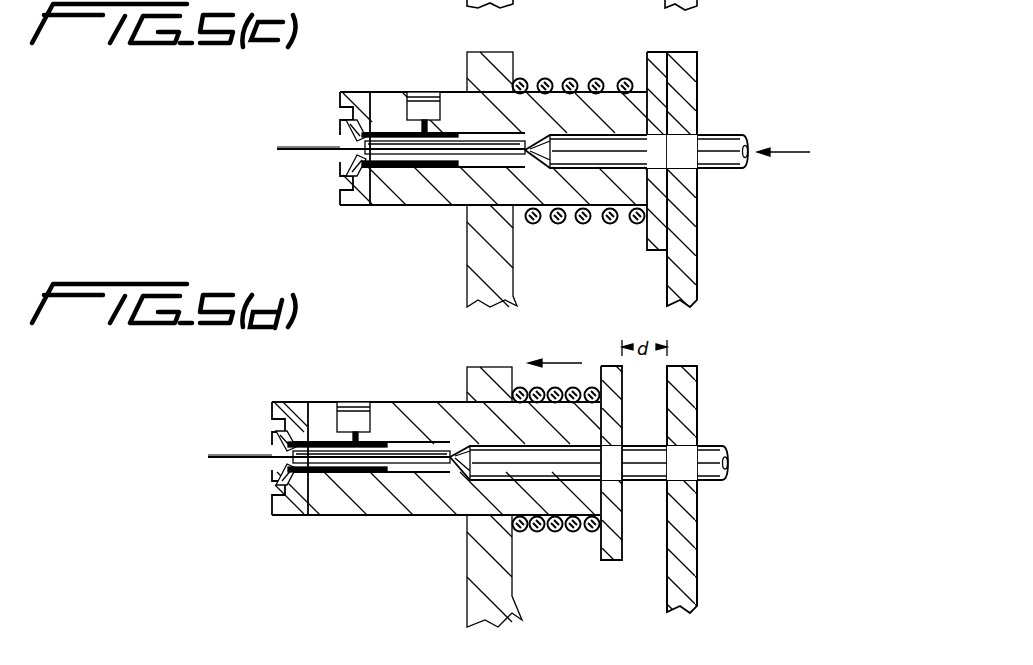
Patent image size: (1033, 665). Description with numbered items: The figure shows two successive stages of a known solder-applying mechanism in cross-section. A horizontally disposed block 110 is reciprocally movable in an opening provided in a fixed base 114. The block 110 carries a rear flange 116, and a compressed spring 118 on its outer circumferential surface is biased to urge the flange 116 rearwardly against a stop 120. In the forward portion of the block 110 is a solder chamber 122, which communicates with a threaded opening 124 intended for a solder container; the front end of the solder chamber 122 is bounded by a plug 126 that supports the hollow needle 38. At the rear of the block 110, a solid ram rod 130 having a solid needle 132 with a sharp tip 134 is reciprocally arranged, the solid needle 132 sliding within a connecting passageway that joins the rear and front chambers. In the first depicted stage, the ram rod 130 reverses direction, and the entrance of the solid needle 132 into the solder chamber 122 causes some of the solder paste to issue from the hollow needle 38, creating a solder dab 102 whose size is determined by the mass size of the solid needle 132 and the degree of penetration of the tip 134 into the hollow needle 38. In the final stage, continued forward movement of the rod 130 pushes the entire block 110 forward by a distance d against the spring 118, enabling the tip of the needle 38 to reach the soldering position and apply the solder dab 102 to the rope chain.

In FIG. 5D, the hollow needle 38 is at (243, 460).
In FIG. 5C, the solder dab 102 is at (279, 151).
In FIG. 5C, the block 110 is at (562, 188).
In FIG. 5D, the block 110 is at (433, 408).
In FIG. 5C, the fixed base 114 is at (475, 290).
In FIG. 5D, the fixed base 114 is at (472, 596).
In FIG. 5C, the rear flange 116 is at (645, 240).
In FIG. 5D, the rear flange 116 is at (607, 562).
In FIG. 5C, the compressed spring 118 is at (588, 79).
In FIG. 5D, the compressed spring 118 is at (541, 532).
In FIG. 5C, the stop 120 is at (700, 68).
In FIG. 5D, the stop 120 is at (692, 406).
In FIG. 5C, the solder chamber 122 is at (374, 133).
In FIG. 5D, the solder chamber 122 is at (318, 442).
In FIG. 5C, the threaded opening 124 is at (423, 92).
In FIG. 5D, the threaded opening 124 is at (353, 422).
In FIG. 5C, the plug 126 is at (346, 135).
In FIG. 5D, the plug 126 is at (276, 443).
In FIG. 5C, the ram rod 130 is at (721, 137).
In FIG. 5D, the ram rod 130 is at (710, 483).
In FIG. 5C, the solid needle 132 is at (462, 207).
In FIG. 5D, the solid needle 132 is at (432, 466).
In FIG. 5C, the sharp tip 134 is at (372, 207).
In FIG. 5D, the sharp tip 134 is at (308, 517).